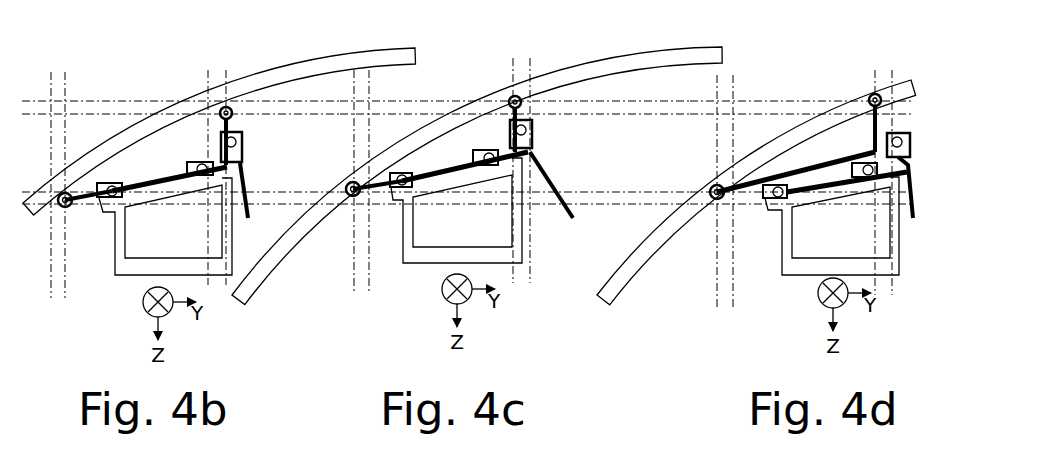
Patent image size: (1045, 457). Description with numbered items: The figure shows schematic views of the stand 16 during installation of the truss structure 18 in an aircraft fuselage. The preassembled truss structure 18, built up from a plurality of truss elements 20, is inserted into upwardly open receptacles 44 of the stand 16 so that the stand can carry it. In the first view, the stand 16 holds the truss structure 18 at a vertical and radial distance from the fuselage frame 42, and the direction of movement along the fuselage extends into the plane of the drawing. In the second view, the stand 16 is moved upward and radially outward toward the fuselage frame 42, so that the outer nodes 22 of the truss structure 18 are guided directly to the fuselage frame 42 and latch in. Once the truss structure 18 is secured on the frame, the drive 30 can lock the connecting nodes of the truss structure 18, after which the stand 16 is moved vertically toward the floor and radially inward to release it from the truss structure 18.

In FIG. 4B, the stand 16 is at (114, 242).
In FIG. 4C, the stand 16 is at (456, 210).
In FIG. 4D, the stand 16 is at (898, 246).
In FIG. 4D, the preassembled truss structure 18 is at (815, 148).
In FIG. 4B, the truss element 20 is at (165, 182).
In FIG. 4C, the truss element 20 is at (442, 148).
In FIG. 4D, the truss element 20 is at (813, 149).
In FIG. 4B, the outer node 22 is at (65, 200).
In FIG. 4C, the outer node 22 is at (348, 189).
In FIG. 4D, the outer node 22 is at (795, 146).
In FIG. 4B, the drive 30 is at (246, 164).
In FIG. 4C, the drive 30 is at (533, 151).
In FIG. 4D, the drive 30 is at (905, 187).
In FIG. 4B, the fuselage frame 42 is at (388, 61).
In FIG. 4C, the fuselage frame 42 is at (658, 61).
In FIG. 4D, the fuselage frame 42 is at (908, 80).
In FIG. 4B, the receptacle 44 is at (112, 183).
In FIG. 4C, the receptacle 44 is at (444, 168).
In FIG. 4D, the receptacle 44 is at (820, 180).